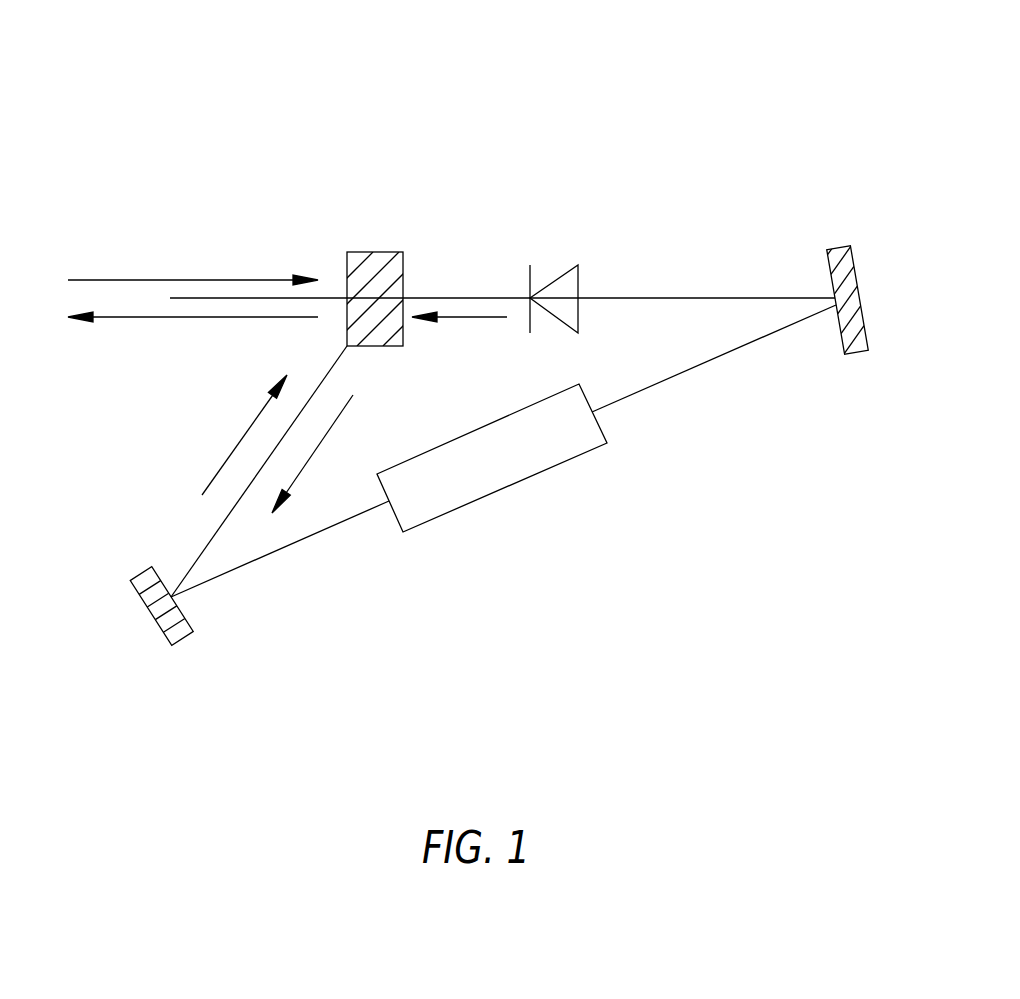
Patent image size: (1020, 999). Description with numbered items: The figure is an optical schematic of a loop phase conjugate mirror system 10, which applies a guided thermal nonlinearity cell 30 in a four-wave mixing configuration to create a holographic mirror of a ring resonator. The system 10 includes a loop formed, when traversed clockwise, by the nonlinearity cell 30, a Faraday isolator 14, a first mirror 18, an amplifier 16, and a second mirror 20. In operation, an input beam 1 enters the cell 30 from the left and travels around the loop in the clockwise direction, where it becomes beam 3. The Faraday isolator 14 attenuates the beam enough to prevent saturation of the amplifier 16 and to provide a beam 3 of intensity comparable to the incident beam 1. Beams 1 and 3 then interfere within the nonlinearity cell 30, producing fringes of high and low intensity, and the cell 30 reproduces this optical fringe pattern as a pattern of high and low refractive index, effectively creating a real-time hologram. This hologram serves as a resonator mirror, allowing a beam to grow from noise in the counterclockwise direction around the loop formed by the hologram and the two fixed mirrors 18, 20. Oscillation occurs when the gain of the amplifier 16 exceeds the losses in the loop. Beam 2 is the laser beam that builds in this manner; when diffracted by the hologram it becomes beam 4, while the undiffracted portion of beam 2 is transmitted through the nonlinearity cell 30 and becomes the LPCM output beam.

The loop phase conjugate mirror system 10 is at (669, 152).
The input beam 1 is at (193, 269).
The beam 2 is at (459, 330).
The beam 3 is at (244, 435).
The beam 4 is at (312, 454).
The Faraday isolator 14 is at (553, 279).
The amplifier 16 is at (503, 488).
The first mirror 18 is at (858, 353).
The second mirror 20 is at (177, 640).
The guided thermal nonlinearity cell 30 is at (373, 252).